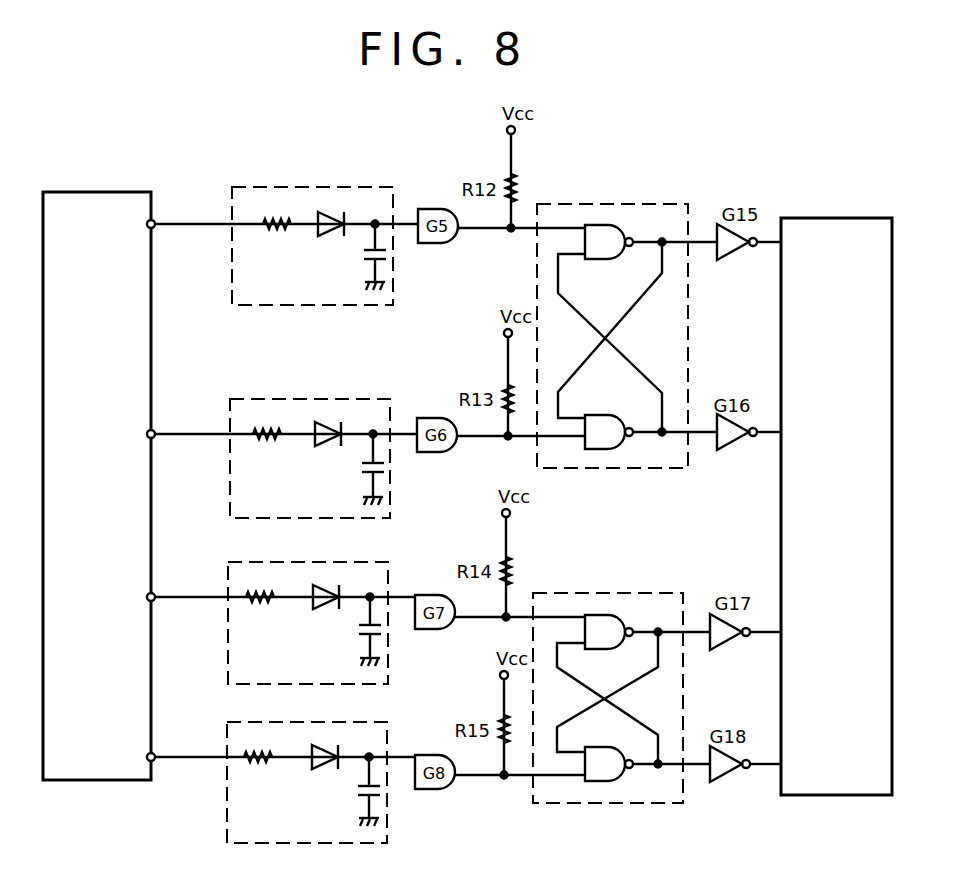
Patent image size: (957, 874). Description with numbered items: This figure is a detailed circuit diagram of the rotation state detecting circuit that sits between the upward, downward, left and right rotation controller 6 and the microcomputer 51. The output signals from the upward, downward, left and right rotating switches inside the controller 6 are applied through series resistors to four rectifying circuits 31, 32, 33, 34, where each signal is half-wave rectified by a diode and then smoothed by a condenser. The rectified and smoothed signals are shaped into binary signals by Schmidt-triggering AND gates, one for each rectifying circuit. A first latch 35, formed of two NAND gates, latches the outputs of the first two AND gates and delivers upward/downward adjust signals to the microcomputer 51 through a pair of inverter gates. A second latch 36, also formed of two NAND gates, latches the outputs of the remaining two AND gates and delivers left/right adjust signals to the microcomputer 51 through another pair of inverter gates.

The upward, downward, left and right rotation controller 6 is at (112, 196).
The rectifying circuit 31 is at (312, 188).
The rectifying circuit 32 is at (330, 400).
The rectifying circuit 33 is at (335, 562).
The rectifying circuit 34 is at (322, 722).
The first latch 35 is at (620, 204).
The second latch 36 is at (627, 593).
The microcomputer 51 is at (846, 227).